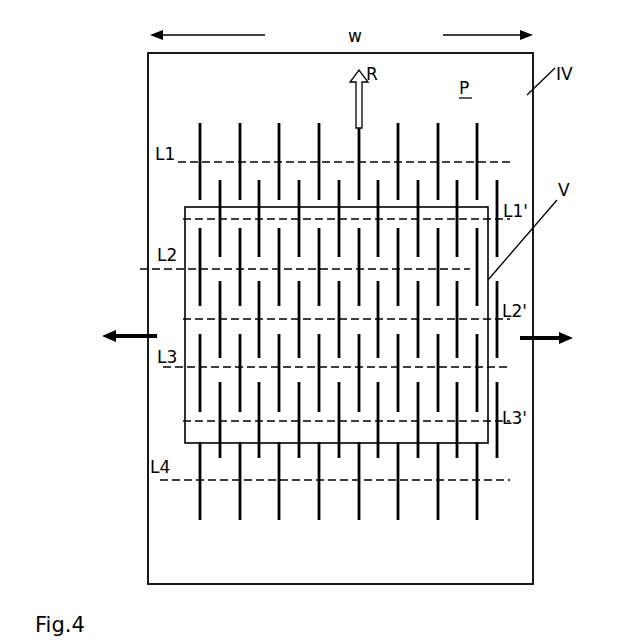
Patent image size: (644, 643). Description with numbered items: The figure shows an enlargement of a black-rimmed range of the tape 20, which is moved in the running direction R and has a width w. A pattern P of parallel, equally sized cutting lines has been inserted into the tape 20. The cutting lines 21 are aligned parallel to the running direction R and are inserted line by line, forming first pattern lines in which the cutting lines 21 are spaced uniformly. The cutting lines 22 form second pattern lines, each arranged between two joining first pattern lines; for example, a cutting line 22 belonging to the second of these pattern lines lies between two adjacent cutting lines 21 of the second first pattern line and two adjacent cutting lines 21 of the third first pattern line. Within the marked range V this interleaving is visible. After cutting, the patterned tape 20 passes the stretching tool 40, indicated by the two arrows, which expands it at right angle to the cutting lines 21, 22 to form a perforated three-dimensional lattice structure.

The tape 20 is at (502, 563).
The cutting lines 21 is at (358, 147).
The cutting lines 22 is at (340, 213).
The stretching tool 40 is at (339, 338).